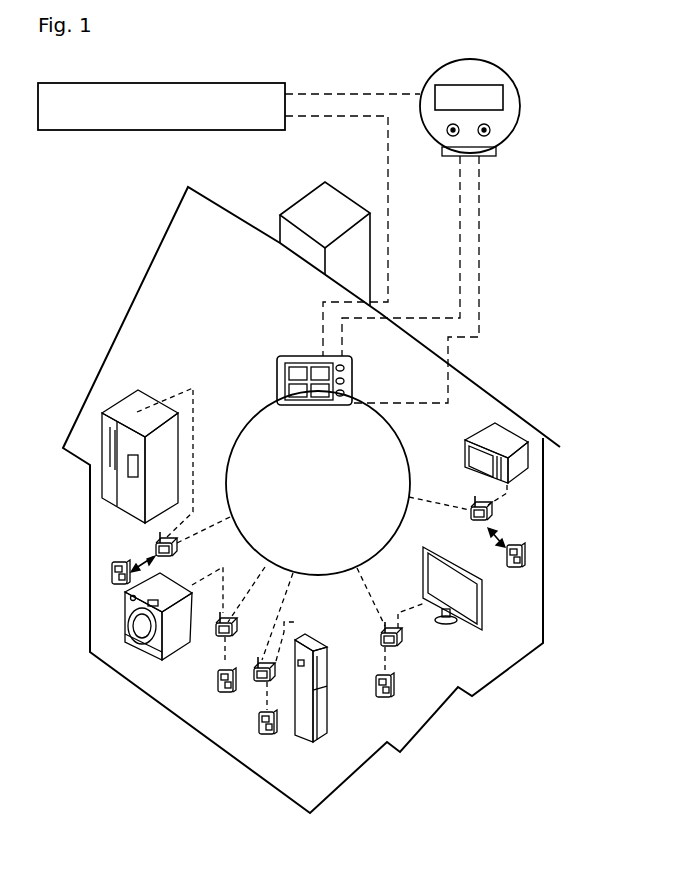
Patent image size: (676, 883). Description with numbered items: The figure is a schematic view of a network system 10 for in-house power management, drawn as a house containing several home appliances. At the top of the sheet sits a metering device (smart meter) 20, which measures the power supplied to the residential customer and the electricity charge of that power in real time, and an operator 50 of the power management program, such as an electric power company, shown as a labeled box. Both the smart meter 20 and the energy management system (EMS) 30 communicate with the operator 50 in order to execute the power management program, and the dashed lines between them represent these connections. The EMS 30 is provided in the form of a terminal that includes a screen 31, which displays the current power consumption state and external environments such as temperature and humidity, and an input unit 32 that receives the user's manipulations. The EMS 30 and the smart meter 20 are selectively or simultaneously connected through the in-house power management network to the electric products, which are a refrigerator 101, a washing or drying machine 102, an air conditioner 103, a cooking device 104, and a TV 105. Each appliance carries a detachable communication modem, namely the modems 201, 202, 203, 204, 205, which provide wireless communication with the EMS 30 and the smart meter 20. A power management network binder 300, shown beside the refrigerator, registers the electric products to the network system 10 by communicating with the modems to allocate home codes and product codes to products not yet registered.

The network system 10 is at (514, 335).
The metering device (smart meter) 20 is at (520, 107).
The energy management system (EMS) 30 is at (310, 347).
The screen 31 is at (297, 372).
The input unit 32 is at (346, 379).
The operator of the power management program 50 is at (162, 82).
The refrigerator 101 is at (103, 452).
The washing or drying machine 102 is at (145, 650).
The air conditioner 103 is at (325, 720).
The cooking device 104 is at (505, 432).
The TV 105 is at (483, 603).
The communication modem 201 is at (155, 546).
The communication modem 202 is at (218, 634).
The communication modem 203 is at (256, 679).
The communication modem 204 is at (490, 515).
The communication modem 205 is at (400, 638).
The power management network binder 300 is at (100, 584).